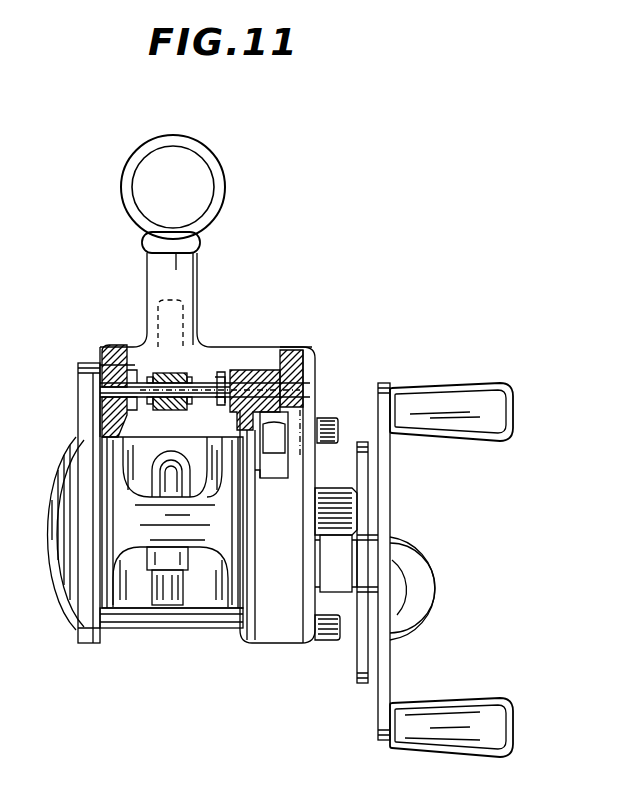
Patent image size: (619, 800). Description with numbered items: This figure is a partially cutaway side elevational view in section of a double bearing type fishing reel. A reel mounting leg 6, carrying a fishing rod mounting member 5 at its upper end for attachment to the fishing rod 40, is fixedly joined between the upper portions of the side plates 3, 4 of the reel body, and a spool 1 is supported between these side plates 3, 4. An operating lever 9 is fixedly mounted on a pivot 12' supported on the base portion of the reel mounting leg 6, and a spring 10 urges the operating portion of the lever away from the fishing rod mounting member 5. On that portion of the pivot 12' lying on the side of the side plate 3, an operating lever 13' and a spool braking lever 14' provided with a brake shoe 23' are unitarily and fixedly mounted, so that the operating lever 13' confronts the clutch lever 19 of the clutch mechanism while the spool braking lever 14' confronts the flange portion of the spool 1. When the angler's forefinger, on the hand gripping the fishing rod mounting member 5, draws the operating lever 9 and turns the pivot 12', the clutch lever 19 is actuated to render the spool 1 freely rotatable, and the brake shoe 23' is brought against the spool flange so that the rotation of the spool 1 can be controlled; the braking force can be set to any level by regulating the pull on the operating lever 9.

The spool 1 is at (220, 580).
The side plate 3 is at (313, 368).
The side plate 4 is at (78, 380).
The fishing rod mounting member 5 is at (200, 243).
The reel mounting leg 6 is at (198, 270).
The operating lever 9 is at (165, 318).
The spring 10 is at (233, 350).
The pivot 12' is at (119, 372).
The operating lever 13' is at (309, 451).
The spool braking lever 14' is at (176, 407).
The clutch lever 19 is at (283, 472).
The brake shoe 23' is at (194, 463).
The fishing rod 40 is at (225, 178).